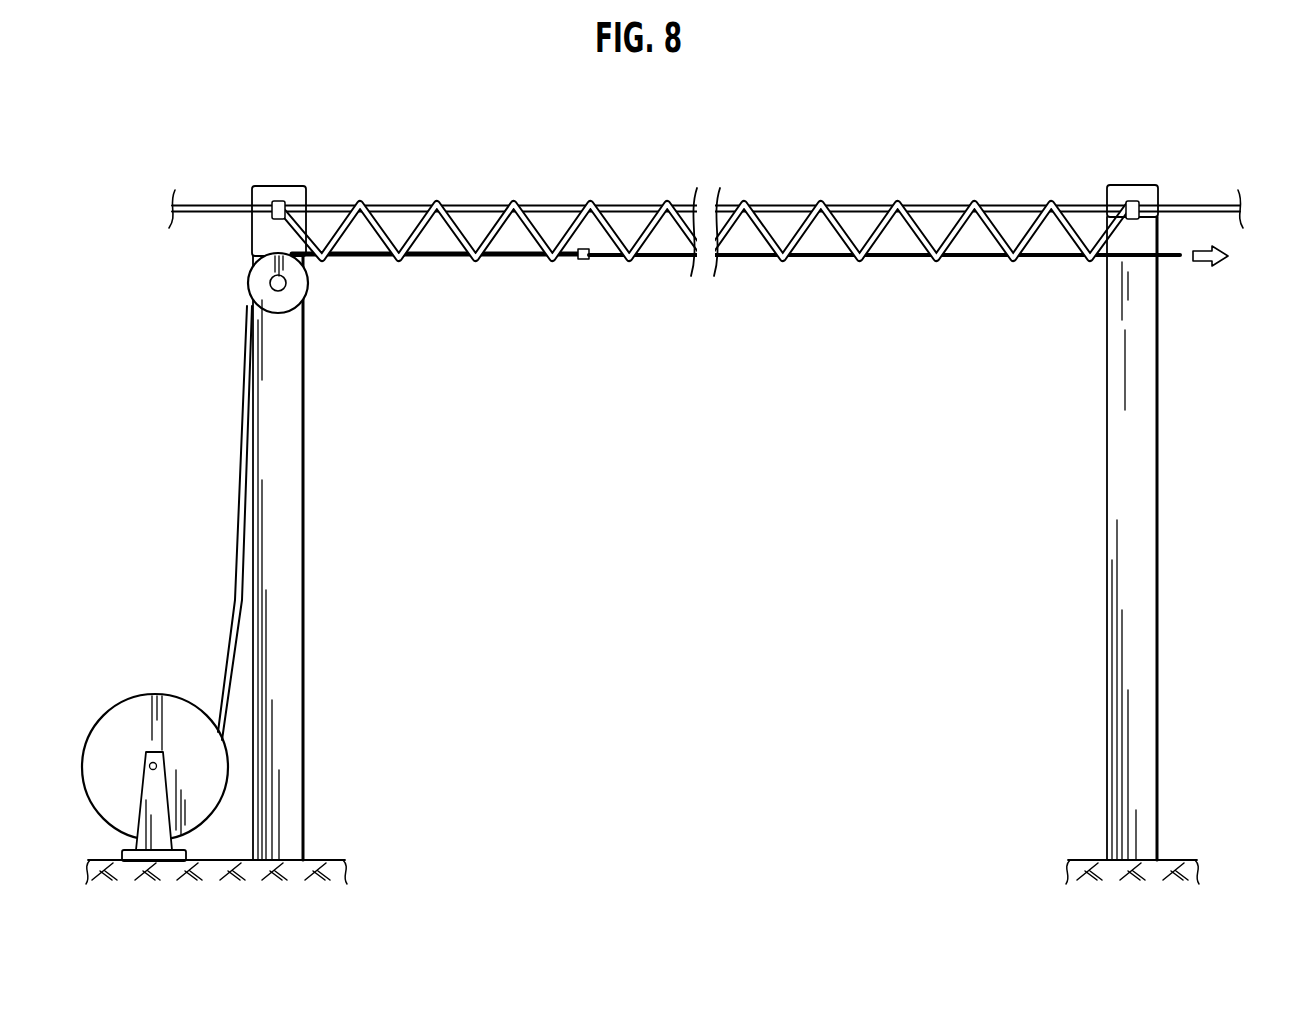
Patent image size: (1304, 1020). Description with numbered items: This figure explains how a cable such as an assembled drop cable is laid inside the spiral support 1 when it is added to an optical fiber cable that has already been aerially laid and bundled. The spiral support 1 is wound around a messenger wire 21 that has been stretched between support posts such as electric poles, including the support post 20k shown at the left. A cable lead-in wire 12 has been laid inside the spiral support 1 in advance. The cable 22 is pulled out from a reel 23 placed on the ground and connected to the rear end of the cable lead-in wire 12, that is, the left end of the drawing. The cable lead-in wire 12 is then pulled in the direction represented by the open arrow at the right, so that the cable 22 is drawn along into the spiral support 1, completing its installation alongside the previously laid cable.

The spiral support 1 is at (977, 188).
The cable lead-in wire 12 is at (822, 260).
The messenger wire 21 is at (860, 205).
The cable 22 is at (512, 258).
The reel 23 is at (150, 698).
The support post 20k is at (274, 186).